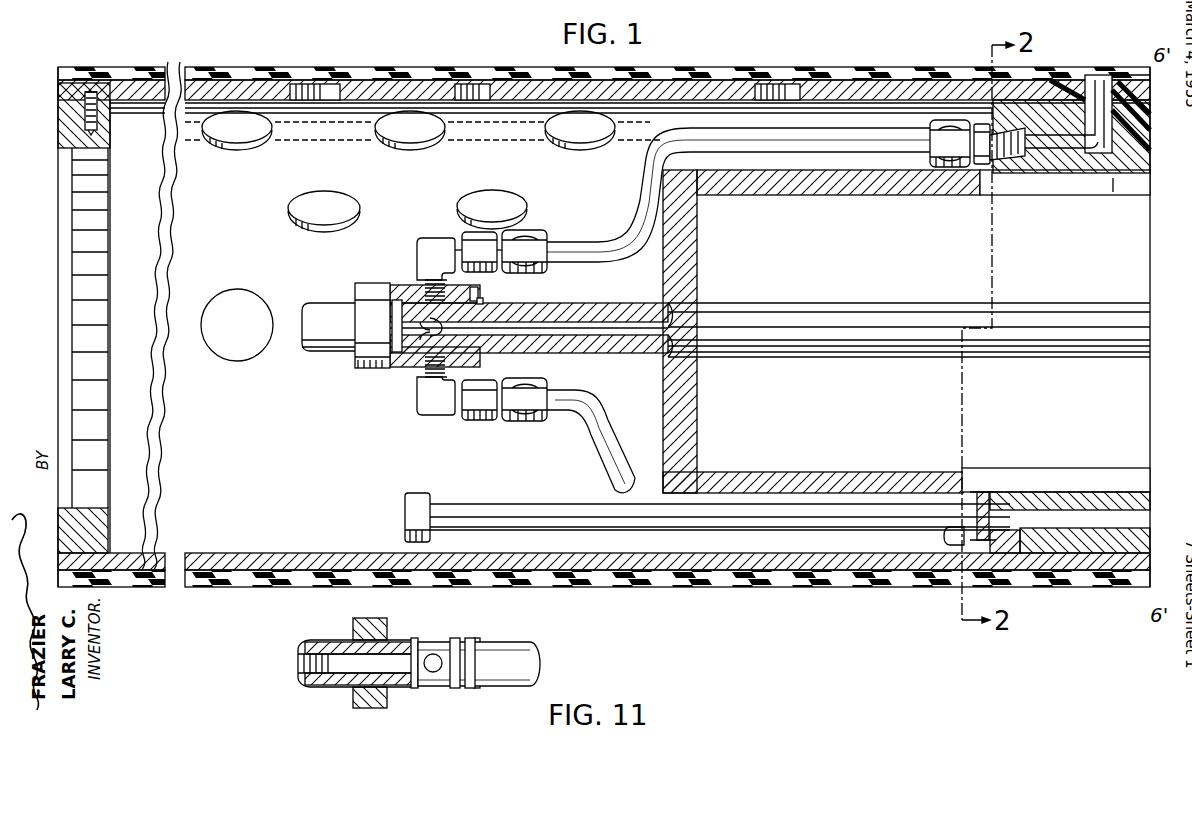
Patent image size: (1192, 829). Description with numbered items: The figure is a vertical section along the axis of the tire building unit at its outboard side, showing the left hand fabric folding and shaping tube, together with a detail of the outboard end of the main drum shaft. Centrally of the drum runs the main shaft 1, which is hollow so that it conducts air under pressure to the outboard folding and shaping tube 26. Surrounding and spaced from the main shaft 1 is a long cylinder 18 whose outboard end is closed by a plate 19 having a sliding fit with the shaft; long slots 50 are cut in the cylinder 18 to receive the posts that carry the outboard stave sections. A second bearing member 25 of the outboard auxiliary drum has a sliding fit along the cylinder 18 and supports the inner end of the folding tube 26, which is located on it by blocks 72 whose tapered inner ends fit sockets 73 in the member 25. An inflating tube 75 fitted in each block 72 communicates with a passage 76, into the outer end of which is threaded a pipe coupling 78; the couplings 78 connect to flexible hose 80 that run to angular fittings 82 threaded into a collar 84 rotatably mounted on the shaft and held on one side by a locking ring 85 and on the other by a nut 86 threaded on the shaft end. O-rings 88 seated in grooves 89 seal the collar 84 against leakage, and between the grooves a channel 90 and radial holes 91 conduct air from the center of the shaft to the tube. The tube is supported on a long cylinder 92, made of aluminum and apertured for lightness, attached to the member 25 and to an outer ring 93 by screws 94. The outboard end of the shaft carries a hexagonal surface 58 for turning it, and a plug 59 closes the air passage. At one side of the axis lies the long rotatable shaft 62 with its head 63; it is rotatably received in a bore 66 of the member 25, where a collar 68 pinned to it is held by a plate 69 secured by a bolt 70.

In FIG. 1, the main shaft 1 is at (1140, 355).
In FIG. 11, the main shaft 1 is at (530, 658).
In FIG. 1, the long cylinder 18 is at (862, 185).
In FIG. 1, the plate 19 is at (690, 252).
In FIG. 1, the second bearing member 25 is at (1065, 165).
In FIG. 1, the outboard folding and shaping tube 26 is at (1058, 72).
In FIG. 1, the long slots 50 is at (1113, 182).
In FIG. 1, the hexagonal surface 58 is at (322, 300).
In FIG. 11, the hexagonal surface 58 is at (335, 640).
In FIG. 11, the plug 59 is at (300, 663).
In FIG. 1, the rotatable shaft 62 is at (862, 530).
In FIG. 1, the head 63 is at (428, 495).
In FIG. 1, the bore 66 is at (1105, 512).
In FIG. 1, the collar 68 is at (985, 505).
In FIG. 1, the plate 69 is at (1000, 540).
In FIG. 1, the bolt 70 is at (952, 545).
In FIG. 1, the blocks 72 is at (1090, 105).
In FIG. 1, the sockets 73 is at (1160, 118).
In FIG. 1, the inflating tube 75 is at (1125, 78).
In FIG. 1, the passage 76 is at (1040, 145).
In FIG. 1, the pipe coupling 78 is at (975, 165).
In FIG. 1, the flexible hose 80 is at (605, 217).
In FIG. 1, the angular fittings 82 is at (437, 248).
In FIG. 1, the collar 84 is at (478, 292).
In FIG. 1, the locking ring 85 is at (483, 300).
In FIG. 1, the nut 86 is at (372, 368).
In FIG. 11, the nut 86 is at (388, 607).
In FIG. 1, the O-rings 88 is at (470, 352).
In FIG. 11, the grooves 89 is at (418, 648).
In FIG. 1, the channel 90 is at (392, 326).
In FIG. 11, the channel 90 is at (438, 656).
In FIG. 1, the radial holes 91 is at (425, 322).
In FIG. 11, the radial holes 91 is at (462, 660).
In FIG. 1, the long cylinder 92 is at (810, 566).
In FIG. 1, the outer ring 93 is at (98, 518).
In FIG. 1, the screws 94 is at (86, 112).